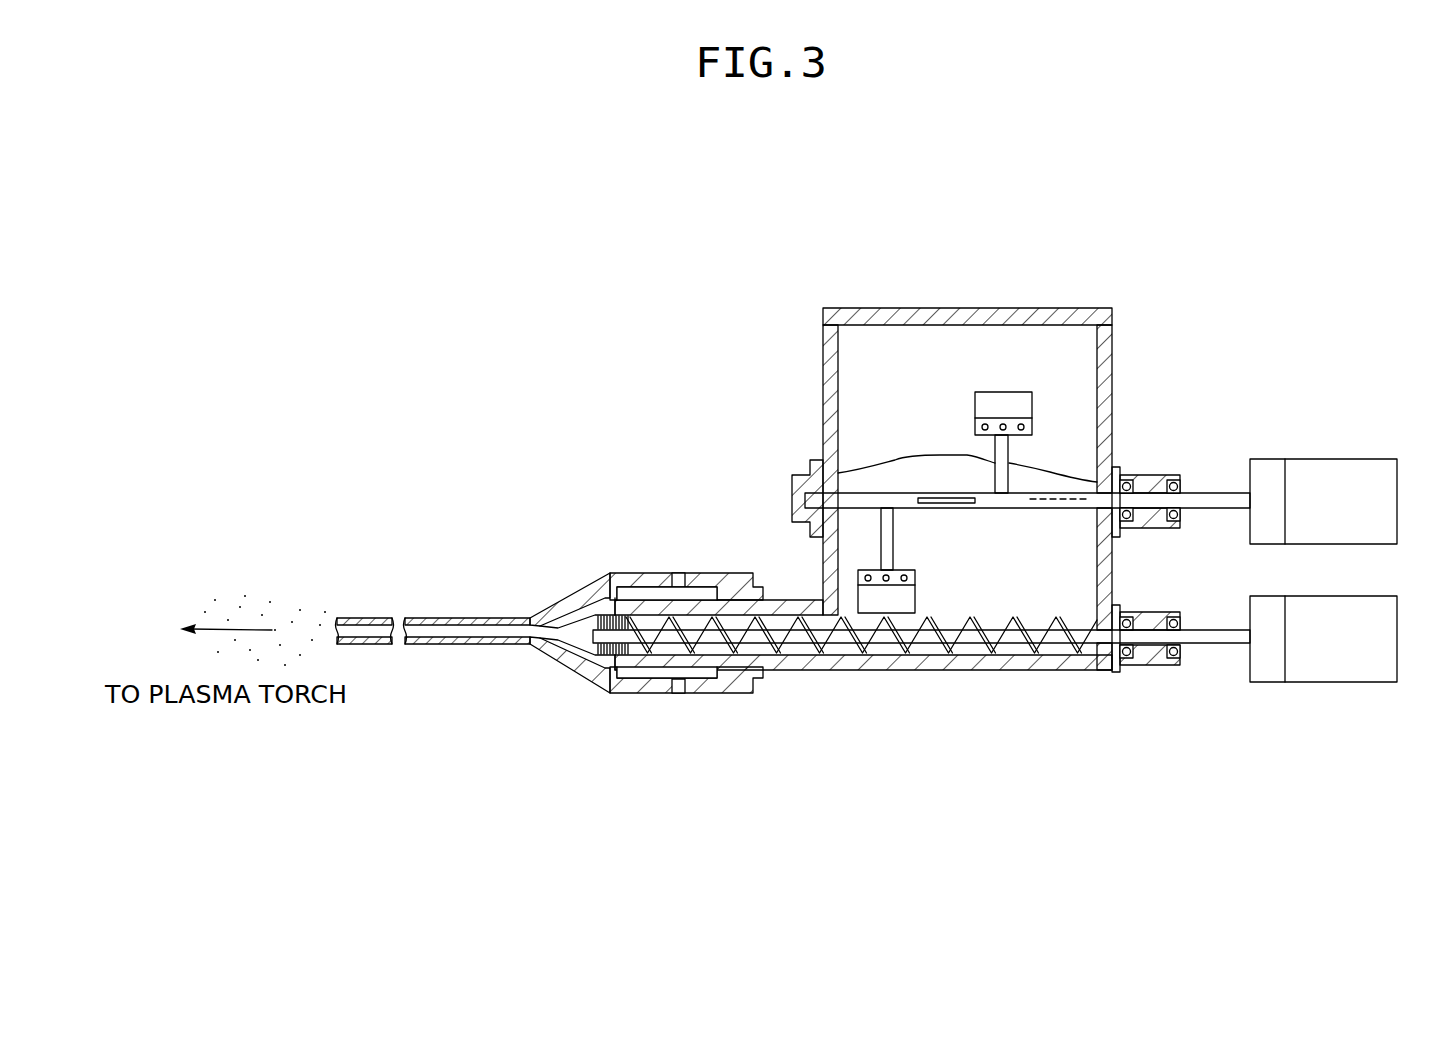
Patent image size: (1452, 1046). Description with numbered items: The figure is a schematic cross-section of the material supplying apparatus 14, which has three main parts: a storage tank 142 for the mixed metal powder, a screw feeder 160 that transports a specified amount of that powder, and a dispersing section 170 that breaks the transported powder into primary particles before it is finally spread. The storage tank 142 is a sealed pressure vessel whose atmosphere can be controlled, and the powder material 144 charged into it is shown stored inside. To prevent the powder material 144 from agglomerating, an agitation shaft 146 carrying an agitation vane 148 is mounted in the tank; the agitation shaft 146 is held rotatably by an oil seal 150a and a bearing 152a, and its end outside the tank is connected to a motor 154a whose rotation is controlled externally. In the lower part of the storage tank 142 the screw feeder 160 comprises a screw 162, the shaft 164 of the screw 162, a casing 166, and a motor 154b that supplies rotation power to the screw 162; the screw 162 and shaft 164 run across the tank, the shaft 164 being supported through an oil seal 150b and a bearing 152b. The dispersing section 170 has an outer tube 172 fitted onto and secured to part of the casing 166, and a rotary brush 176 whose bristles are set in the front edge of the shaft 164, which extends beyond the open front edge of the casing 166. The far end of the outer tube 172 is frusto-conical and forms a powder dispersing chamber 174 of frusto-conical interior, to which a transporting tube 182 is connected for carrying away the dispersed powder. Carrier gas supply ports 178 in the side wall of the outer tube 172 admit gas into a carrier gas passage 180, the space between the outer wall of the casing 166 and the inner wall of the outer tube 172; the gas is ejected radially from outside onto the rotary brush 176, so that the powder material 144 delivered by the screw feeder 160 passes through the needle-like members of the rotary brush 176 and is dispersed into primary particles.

The material supplying apparatus 14 is at (1168, 230).
The storage tank 142 is at (823, 347).
The powder material 144 is at (877, 472).
The agitation shaft 146 is at (900, 497).
The agitation vane 148 is at (1006, 400).
The oil seal 150a is at (1122, 473).
The oil seal 150b is at (1115, 672).
The bearing 152a is at (1123, 478).
The bearing 152b is at (1135, 612).
The motor 154a is at (1335, 475).
The motor 154b is at (1335, 667).
The screw feeder 160 is at (890, 725).
The screw 162 is at (972, 653).
The shaft 164 is at (918, 650).
The casing 166 is at (828, 663).
The dispersing section 170 is at (637, 768).
The outer tube 172 is at (633, 697).
The powder dispersing chamber 174 is at (567, 657).
The rotary brush 176 is at (597, 668).
The carrier gas supply ports 178 is at (680, 578).
The carrier gas passage 180 is at (628, 594).
The transporting tube 182 is at (450, 647).